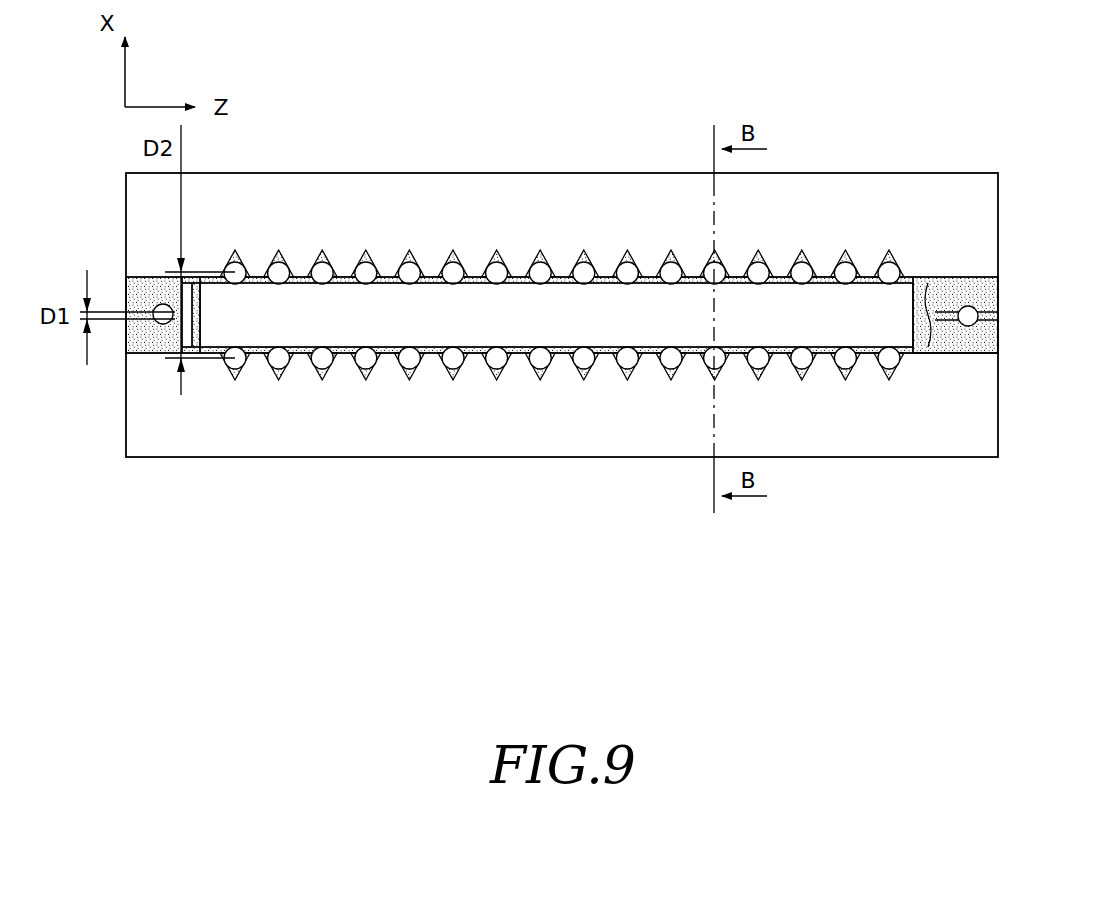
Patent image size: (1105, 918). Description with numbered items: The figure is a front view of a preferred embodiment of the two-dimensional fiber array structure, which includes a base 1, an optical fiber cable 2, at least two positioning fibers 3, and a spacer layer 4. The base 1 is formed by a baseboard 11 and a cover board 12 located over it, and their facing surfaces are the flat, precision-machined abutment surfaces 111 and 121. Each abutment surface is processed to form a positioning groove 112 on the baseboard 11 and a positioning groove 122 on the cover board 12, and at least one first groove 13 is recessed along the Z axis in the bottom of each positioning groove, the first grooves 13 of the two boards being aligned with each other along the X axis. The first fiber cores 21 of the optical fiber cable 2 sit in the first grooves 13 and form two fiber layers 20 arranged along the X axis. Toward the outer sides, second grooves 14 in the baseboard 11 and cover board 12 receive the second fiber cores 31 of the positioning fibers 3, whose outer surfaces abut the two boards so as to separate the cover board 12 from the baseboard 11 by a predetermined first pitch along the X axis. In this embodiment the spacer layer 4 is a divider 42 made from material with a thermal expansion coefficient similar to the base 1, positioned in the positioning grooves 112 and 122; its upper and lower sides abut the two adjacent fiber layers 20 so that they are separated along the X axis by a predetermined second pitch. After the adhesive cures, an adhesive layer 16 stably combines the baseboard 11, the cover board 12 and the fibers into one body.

The base 1 is at (1020, 165).
The optical fiber cable 2 is at (576, 449).
The positioning fibers 3 is at (159, 462).
The spacer layer 4 is at (556, 465).
The baseboard 11 is at (978, 447).
The cover board 12 is at (983, 220).
The first groove 13 is at (893, 372).
The second groove 14 is at (962, 355).
The adhesive layer 16 is at (847, 378).
The fiber layer 20 is at (468, 373).
The first fiber core 21 is at (407, 273).
The second fiber core 31 is at (160, 323).
The divider 42 is at (263, 333).
The abutment surface 111 is at (997, 323).
The positioning groove 112 is at (928, 355).
The abutment surface 121 is at (978, 308).
The positioning groove 122 is at (932, 278).